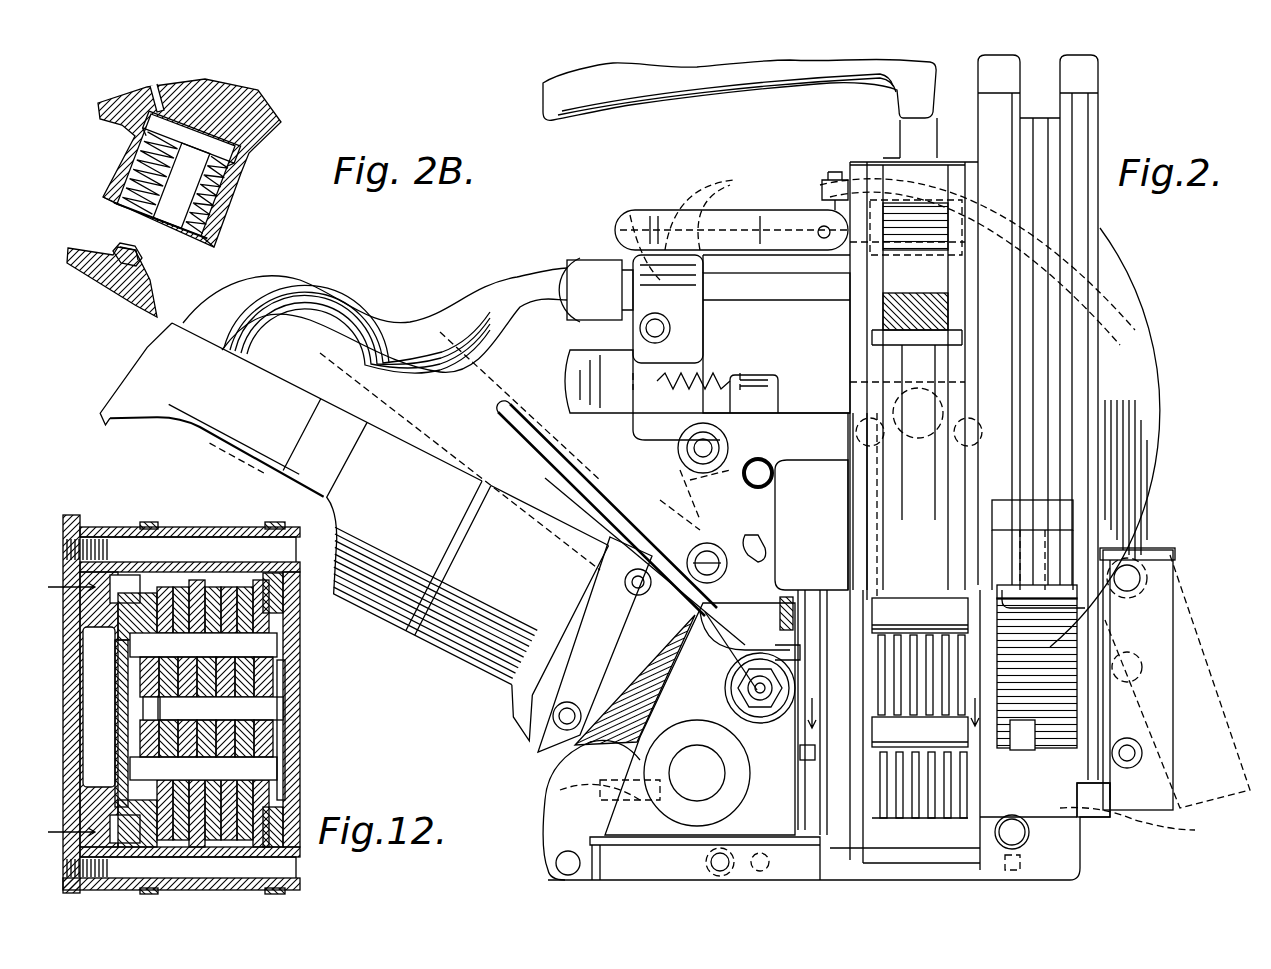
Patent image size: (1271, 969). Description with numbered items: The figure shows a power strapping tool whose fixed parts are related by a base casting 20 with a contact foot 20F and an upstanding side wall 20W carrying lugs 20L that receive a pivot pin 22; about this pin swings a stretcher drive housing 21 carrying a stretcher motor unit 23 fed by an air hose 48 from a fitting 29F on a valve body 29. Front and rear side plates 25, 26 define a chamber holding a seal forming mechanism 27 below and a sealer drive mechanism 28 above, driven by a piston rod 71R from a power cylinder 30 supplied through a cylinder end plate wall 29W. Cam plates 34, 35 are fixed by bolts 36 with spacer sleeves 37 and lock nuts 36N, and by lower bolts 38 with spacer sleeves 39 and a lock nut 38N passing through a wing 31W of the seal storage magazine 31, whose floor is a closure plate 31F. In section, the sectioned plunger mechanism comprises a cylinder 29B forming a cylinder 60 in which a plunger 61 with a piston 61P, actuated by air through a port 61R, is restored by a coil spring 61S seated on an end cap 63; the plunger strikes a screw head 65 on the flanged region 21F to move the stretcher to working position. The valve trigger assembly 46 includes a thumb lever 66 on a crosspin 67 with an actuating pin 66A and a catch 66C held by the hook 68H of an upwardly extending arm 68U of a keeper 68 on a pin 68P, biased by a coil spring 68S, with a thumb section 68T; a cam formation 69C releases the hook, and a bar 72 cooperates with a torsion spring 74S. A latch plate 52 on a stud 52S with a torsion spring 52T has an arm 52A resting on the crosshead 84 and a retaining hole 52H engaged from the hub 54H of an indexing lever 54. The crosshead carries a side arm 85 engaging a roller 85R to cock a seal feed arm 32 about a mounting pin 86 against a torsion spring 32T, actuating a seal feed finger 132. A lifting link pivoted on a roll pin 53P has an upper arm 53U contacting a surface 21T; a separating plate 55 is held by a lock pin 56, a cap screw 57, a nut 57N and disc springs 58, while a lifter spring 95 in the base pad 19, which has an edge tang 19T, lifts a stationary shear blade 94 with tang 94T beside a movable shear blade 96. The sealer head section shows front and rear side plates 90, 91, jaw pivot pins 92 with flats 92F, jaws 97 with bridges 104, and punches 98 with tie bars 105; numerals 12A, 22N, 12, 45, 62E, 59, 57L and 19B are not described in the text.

In FIG. 2B, the port 61R is at (163, 84).
In FIG. 2B, the valve body 29 is at (232, 97).
In FIG. 2, the valve body 29 is at (793, 342).
In FIG. 2B, the piston 61P is at (222, 143).
In FIG. 2, the piston 61P is at (780, 392).
In FIG. 2B, the cylinder 29B is at (238, 168).
In FIG. 2, the cylinder 29B is at (600, 480).
In FIG. 2B, the coil spring 61S is at (110, 186).
In FIG. 2, the coil spring 61S is at (770, 515).
In FIG. 2B, the screw head 65 is at (118, 252).
In FIG. 2, the screw head 65 is at (595, 644).
In FIG. 2B, the plunger 61 is at (163, 207).
In FIG. 2, the plunger 61 is at (690, 518).
In FIG. 2B, the stretcher drive housing 21 is at (99, 268).
In FIG. 2, the stretcher drive housing 21 is at (707, 674).
In FIG. 12, the front side plate 25 is at (70, 566).
In FIG. 2, the front side plate 25 is at (770, 560).
In FIG. 12, the cam plates 34 is at (160, 893).
In FIG. 2, the cam plates 34 is at (830, 706).
In FIG. 12, the punches 98 is at (178, 847).
In FIG. 12, the jaws 97 is at (226, 845).
In FIG. 12, the cam plates 35 is at (292, 893).
In FIG. 2, the cam plates 35 is at (1037, 624).
In FIG. 12, the section line 12A is at (65, 718).
In FIG. 12, the rear side plate 26 is at (300, 626).
In FIG. 2, the rear side plate 26 is at (1009, 516).
In FIG. 12, the tang 94T is at (101, 644).
In FIG. 12, the stationary shear blade 94 is at (99, 707).
In FIG. 12, the movable shear blade 96 is at (122, 700).
In FIG. 12, the front side plate 90 is at (143, 712).
In FIG. 12, the rear side plate 91 is at (292, 693).
In FIG. 12, the flats 92F is at (167, 708).
In FIG. 12, the bridge 104 is at (208, 666).
In FIG. 2, the bridge 104 is at (945, 818).
In FIG. 12, the jaw pivot pins 92 is at (223, 778).
In FIG. 12, the tie bar 105 is at (211, 727).
In FIG. 2, the tie bar 105 is at (880, 818).
In FIG. 2, the cam formation 69C is at (658, 195).
In FIG. 2, the thumb lever 66 is at (655, 215).
In FIG. 2, the catch 66C is at (700, 210).
In FIG. 2, the crosspin 67 is at (822, 228).
In FIG. 2, the hook 68H is at (640, 215).
In FIG. 2, the fitting 29F is at (598, 258).
In FIG. 2, the bar 72 is at (900, 240).
In FIG. 2, the torsion spring 74S is at (895, 300).
In FIG. 2, the sealer drive mechanism 28 is at (978, 296).
In FIG. 2, the power cylinder 30 is at (1116, 283).
In FIG. 2, the cylinder end plate wall 29W is at (1140, 338).
In FIG. 2, the actuating pin 66A is at (780, 262).
In FIG. 2, the upwardly extending arm 68U is at (700, 280).
In FIG. 2, the valve trigger assembly 46 is at (776, 306).
In FIG. 2, the pin 68P is at (672, 328).
In FIG. 2, the coil spring 68S is at (725, 372).
In FIG. 2, the thumb section 68T is at (570, 382).
In FIG. 2, the keeper 68 is at (612, 352).
In FIG. 2, the stretcher motor unit 23 is at (325, 378).
In FIG. 2, the air hose 48 is at (266, 348).
In FIG. 2, the piston rod 71R is at (919, 432).
In FIG. 2, the crosshead 84 is at (920, 490).
In FIG. 2, the seal storage magazine 31 is at (1088, 420).
In FIG. 2, the torsion spring 52T is at (665, 425).
In FIG. 2, the stud 52S is at (680, 450).
In FIG. 2, the indexing lever 54 is at (532, 488).
In FIG. 2, the latch plate 52 is at (785, 510).
In FIG. 2, the arm 52A is at (840, 455).
In FIG. 2, the retaining hole 52H is at (770, 565).
In FIG. 2, the lock nuts 36N is at (810, 604).
In FIG. 2, the side arm 85 is at (1000, 460).
In FIG. 2, the roller 85R is at (1063, 532).
In FIG. 2, the mounting pin 86 is at (1130, 570).
In FIG. 2, the torsion spring 32T is at (1178, 555).
In FIG. 2, the seal feed arm 32 is at (1185, 612).
In FIG. 2, the bolts 36 is at (1042, 586).
In FIG. 2, the spacer sleeves 37 is at (921, 730).
In FIG. 2, the end cap 63 is at (627, 509).
In FIG. 2, the cylinder 60 is at (687, 500).
In FIG. 2, the flanged region 21F is at (600, 635).
In FIG. 2, the hub 54H is at (729, 620).
In FIG. 2, the side wall 20W is at (771, 644).
In FIG. 2, the lugs 20L is at (795, 668).
In FIG. 2, the nut 22N is at (780, 682).
In FIG. 2, the section line 12 is at (898, 712).
In FIG. 2, the wedge 45 is at (690, 740).
In FIG. 2, the pivot pin 22 is at (755, 688).
In FIG. 2, the seal forming mechanism 27 is at (1012, 680).
In FIG. 2, the bolts 38 is at (1022, 712).
In FIG. 2, the spacer sleeves 39 is at (920, 726).
In FIG. 2, the lock nut 38N is at (818, 756).
In FIG. 2, the base casting 20 is at (816, 806).
In FIG. 2, the upper arm 53U is at (560, 778).
In FIG. 2, the surface 21T is at (610, 780).
In FIG. 2, the nut 57N is at (697, 773).
In FIG. 2, the eccentric 62E is at (697, 773).
In FIG. 2, the washer 59 is at (710, 805).
In FIG. 2, the disc springs 58 is at (560, 795).
In FIG. 2, the lug 57L is at (560, 848).
In FIG. 2, the roll pin 53P is at (556, 862).
In FIG. 2, the cap screw 57 is at (600, 882).
In FIG. 2, the separating plate 55 is at (660, 860).
In FIG. 2, the lock pin 56 is at (748, 868).
In FIG. 2, the contact foot 20F is at (800, 862).
In FIG. 2, the edge tang 19T is at (835, 852).
In FIG. 2, the lifter spring 95 is at (870, 860).
In FIG. 2, the base pad 19 is at (980, 868).
In FIG. 2, the seal feed finger 132 is at (1020, 838).
In FIG. 2, the base boss 19B is at (1018, 845).
In FIG. 2, the closure plate 31F is at (1085, 820).
In FIG. 2, the wing 31W is at (1098, 785).